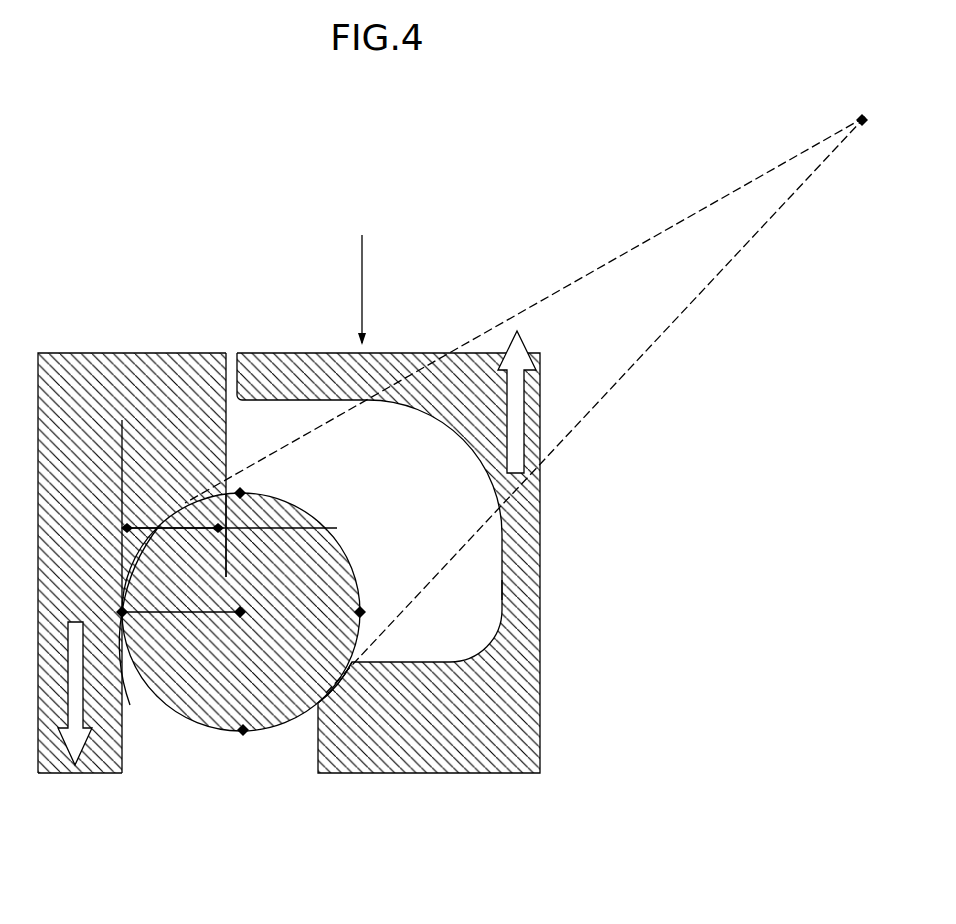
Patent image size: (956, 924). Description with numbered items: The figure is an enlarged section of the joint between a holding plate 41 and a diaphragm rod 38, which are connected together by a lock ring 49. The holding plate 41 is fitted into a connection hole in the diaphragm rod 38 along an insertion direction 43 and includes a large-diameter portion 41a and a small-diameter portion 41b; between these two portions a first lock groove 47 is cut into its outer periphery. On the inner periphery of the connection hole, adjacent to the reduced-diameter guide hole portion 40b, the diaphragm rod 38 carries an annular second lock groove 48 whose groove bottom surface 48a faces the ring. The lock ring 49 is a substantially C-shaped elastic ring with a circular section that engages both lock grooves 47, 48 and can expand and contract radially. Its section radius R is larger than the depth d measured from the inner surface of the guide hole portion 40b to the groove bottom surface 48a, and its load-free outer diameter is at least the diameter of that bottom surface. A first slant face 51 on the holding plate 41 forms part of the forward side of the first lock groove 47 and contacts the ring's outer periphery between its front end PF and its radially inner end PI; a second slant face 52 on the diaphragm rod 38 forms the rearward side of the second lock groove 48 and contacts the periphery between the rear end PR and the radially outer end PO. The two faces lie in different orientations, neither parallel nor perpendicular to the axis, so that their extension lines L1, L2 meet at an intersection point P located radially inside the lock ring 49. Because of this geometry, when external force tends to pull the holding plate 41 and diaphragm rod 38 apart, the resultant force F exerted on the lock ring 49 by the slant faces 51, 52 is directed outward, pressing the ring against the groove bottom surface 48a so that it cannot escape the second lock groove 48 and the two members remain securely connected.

The diaphragm rod 38 is at (148, 560).
The reduced-diameter guide hole portion 40b is at (227, 425).
The holding plate 41 is at (388, 566).
The large-diameter portion 41a is at (275, 385).
The small-diameter portion 41b is at (418, 760).
The insertion direction 43 is at (363, 292).
The first lock groove 47 is at (500, 586).
The second lock groove 48 is at (130, 695).
The groove bottom surface 48a is at (123, 760).
The lock ring 49 is at (187, 714).
The first slant face 51 is at (355, 657).
The second slant face 52 is at (249, 530).
The intersection point P is at (864, 112).
The extension line L1 is at (592, 422).
The extension line L2 is at (596, 272).
The depth d is at (178, 530).
The radius R is at (183, 608).
The resultant force F is at (243, 616).
The outer end PO is at (120, 610).
The rear end PR is at (241, 490).
The inner end PI is at (363, 610).
The front end PF is at (243, 733).